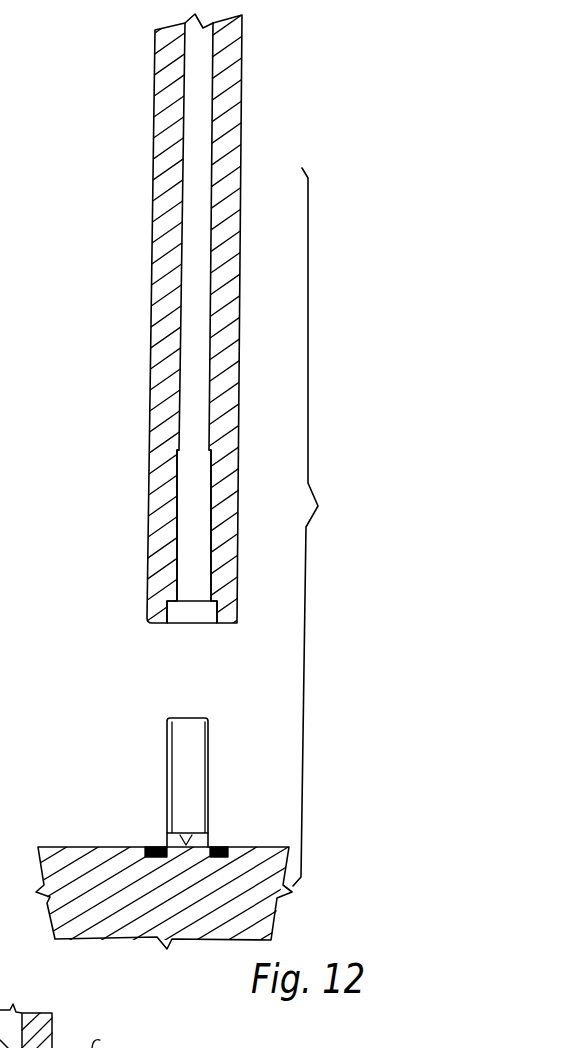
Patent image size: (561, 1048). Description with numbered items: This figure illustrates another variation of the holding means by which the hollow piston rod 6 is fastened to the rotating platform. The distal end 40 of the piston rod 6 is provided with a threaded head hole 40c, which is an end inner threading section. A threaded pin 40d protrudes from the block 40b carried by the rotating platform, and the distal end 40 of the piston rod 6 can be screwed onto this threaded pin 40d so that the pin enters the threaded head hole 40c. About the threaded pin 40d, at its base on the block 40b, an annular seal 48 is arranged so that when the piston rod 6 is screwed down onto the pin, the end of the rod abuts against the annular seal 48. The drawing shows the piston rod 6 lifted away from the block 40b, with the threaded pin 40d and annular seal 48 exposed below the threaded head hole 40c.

The piston rod 6 is at (172, 426).
The distal end 40 is at (150, 403).
The threaded head hole 40c is at (181, 549).
The threaded pin 40d is at (210, 762).
The block 40b is at (68, 843).
The annular seal 48 is at (218, 846).